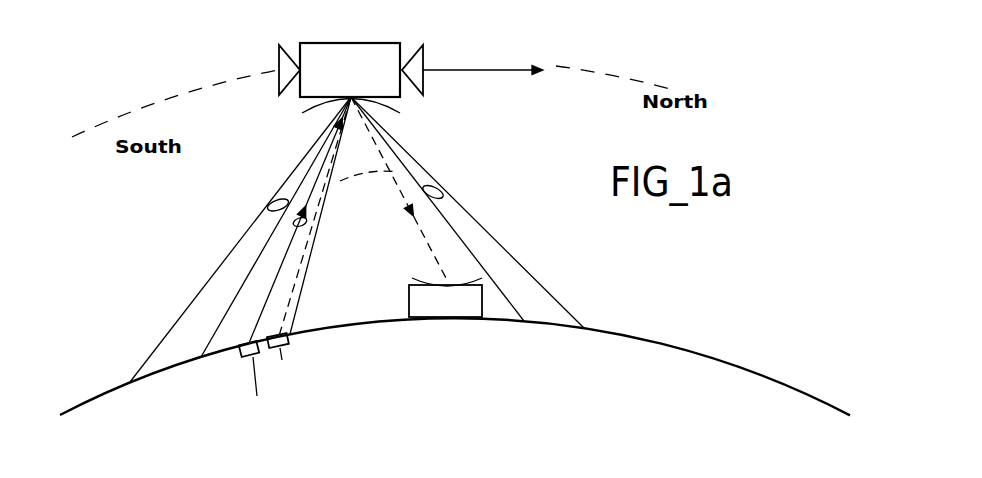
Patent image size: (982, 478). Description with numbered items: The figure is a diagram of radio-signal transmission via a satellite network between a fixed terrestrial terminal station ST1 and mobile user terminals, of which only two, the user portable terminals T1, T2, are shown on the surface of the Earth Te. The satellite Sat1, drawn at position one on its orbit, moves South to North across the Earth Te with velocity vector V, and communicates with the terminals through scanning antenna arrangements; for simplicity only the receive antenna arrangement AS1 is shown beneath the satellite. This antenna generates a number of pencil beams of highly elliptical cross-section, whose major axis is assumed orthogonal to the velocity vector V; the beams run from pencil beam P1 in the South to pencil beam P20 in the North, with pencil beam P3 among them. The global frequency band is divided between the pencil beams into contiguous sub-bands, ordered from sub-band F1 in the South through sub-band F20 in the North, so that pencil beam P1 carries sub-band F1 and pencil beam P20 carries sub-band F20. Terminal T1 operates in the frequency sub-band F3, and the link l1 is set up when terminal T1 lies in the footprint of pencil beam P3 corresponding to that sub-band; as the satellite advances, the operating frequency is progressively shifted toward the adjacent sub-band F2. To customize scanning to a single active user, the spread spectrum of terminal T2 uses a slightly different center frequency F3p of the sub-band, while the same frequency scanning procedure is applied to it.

The satellite Sat1 is at (397, 43).
The velocity vector V is at (517, 66).
The receive antenna arrangement AS1 is at (400, 110).
The frequency sub-band F1 is at (240, 239).
The frequency sub-band F2 is at (276, 227).
The frequency sub-band F3 is at (312, 216).
The center frequency F3p is at (268, 297).
The frequency sub-band F20 is at (467, 212).
The link l1 is at (300, 253).
The pencil beam P1 is at (268, 206).
The pencil beam P20 is at (443, 188).
The pencil beam P3 is at (318, 223).
The user portable terminal T1 is at (290, 342).
The user portable terminal T2 is at (242, 356).
The fixed terrestrial terminal station ST1 is at (416, 320).
The Earth Te is at (831, 398).